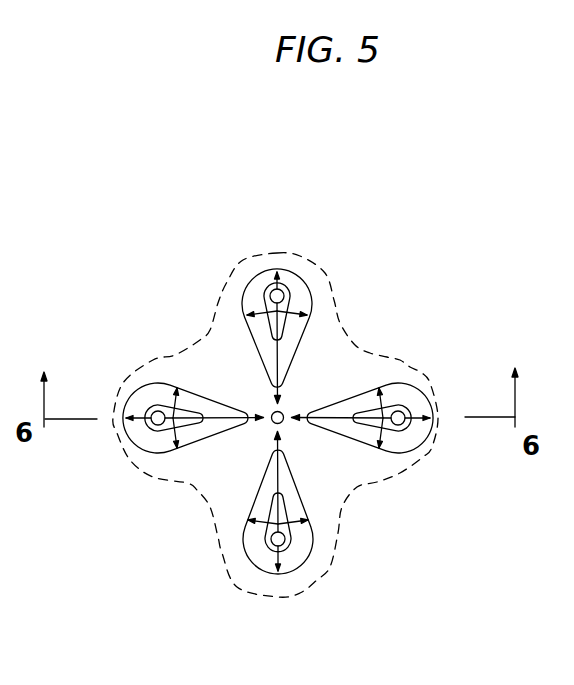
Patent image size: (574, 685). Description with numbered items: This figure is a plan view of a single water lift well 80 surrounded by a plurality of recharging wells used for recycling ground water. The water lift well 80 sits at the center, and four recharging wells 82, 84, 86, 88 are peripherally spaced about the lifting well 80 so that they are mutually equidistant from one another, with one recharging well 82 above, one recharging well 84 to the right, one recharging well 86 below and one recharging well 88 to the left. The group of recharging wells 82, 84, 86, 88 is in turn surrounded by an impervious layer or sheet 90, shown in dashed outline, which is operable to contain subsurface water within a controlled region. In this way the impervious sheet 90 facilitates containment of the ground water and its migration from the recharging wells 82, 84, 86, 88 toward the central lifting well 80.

The water lift well 80 is at (285, 410).
The recharging well 82 is at (285, 288).
The recharging well 84 is at (412, 433).
The recharging well 86 is at (271, 545).
The recharging well 88 is at (151, 423).
The impervious layer or sheet 90 is at (391, 355).